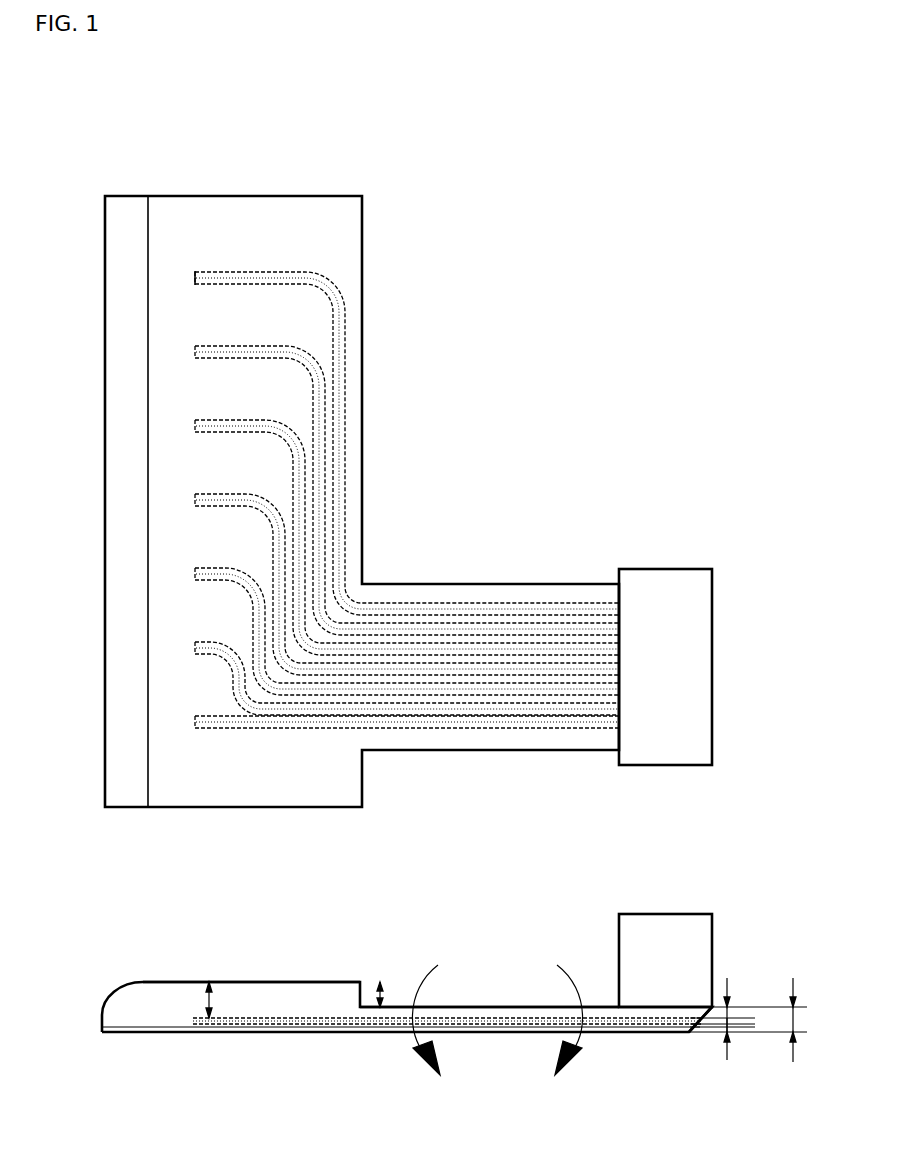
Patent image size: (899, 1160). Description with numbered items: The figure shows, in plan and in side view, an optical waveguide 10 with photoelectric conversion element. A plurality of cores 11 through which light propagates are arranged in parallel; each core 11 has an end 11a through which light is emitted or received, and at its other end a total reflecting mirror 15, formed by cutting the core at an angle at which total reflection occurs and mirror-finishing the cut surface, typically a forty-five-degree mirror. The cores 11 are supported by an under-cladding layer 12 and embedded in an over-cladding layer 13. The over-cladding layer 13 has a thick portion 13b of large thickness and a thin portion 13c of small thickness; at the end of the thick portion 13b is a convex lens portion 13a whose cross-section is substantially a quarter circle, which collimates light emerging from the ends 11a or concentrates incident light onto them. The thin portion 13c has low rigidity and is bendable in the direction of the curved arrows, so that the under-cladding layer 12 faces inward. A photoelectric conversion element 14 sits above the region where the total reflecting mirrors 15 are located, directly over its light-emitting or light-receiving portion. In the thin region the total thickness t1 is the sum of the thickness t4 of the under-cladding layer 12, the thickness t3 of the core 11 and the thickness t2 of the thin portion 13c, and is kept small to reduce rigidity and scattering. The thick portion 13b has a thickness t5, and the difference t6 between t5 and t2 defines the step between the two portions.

The optical waveguide with photoelectric conversion element 10 is at (573, 181).
The core 11 is at (335, 283).
The end of core 11a is at (193, 278).
The under-cladding layer 12 is at (165, 1032).
The over-cladding layer 13 is at (235, 1000).
The convex lens portion 13a is at (125, 491).
The thick portion 13b is at (273, 980).
The thin portion 13c is at (487, 1007).
The photoelectric conversion element 14 is at (677, 671).
The total reflecting mirror 15 is at (697, 1025).
The total thickness t1 is at (759, 1020).
The thickness of thin portion t2 is at (727, 1010).
The thickness of core t3 is at (727, 1025).
The thickness of under-cladding layer t4 is at (727, 1028).
The thickness of thick portion t5 is at (195, 1000).
The thickness difference t6 is at (392, 995).